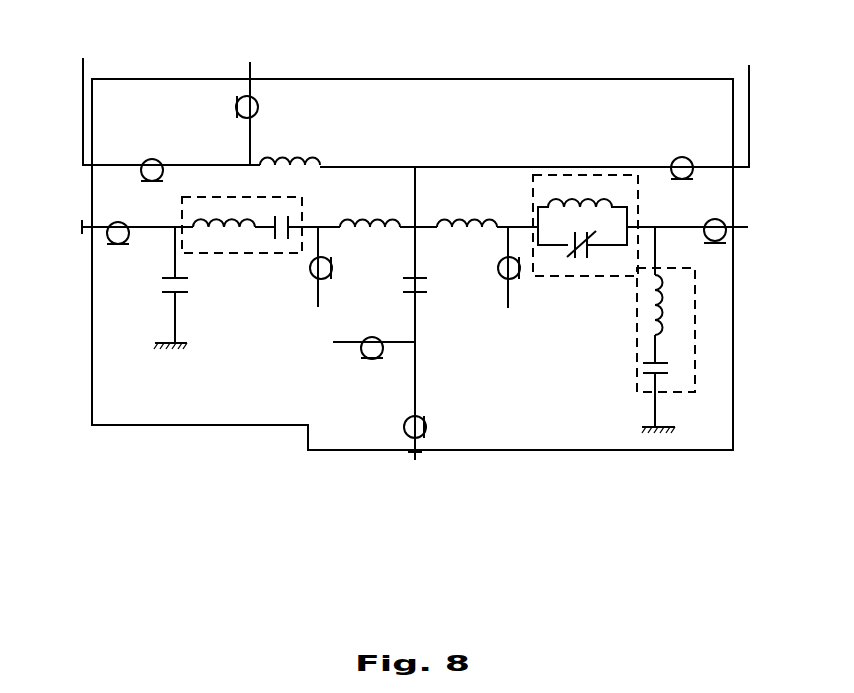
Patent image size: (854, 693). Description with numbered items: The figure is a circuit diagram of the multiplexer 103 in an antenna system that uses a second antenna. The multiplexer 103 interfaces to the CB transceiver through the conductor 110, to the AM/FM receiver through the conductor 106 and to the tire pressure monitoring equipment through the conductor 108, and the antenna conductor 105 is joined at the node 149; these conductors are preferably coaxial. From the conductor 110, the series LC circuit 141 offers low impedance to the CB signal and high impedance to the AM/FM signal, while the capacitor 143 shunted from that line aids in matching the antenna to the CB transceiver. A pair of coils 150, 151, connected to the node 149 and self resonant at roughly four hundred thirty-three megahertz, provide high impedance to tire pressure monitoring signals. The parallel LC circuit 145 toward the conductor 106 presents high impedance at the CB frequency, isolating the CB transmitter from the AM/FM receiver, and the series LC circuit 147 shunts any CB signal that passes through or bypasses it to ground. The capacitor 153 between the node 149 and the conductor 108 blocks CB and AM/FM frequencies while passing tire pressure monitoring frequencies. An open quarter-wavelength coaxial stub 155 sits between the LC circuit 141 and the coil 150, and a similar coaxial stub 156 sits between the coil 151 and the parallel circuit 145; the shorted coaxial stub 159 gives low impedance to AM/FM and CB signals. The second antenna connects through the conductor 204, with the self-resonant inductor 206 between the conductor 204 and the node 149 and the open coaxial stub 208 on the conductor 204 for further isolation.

The multiplexer 103 is at (520, 78).
The antenna conductor 105 is at (749, 138).
The conductor 106 is at (738, 228).
The conductor 108 is at (416, 452).
The conductor 110 is at (84, 228).
The series LC circuit 141 is at (280, 198).
The capacitor 143 is at (150, 288).
The parallel LC resonator 145 is at (618, 216).
The series LC shunt to ground 147 is at (637, 378).
The node 149 is at (414, 166).
The coil 150 is at (367, 220).
The coil 151 is at (462, 220).
The capacitor 153 is at (418, 275).
The coaxial stub 155 is at (320, 298).
The coaxial stub 156 is at (508, 298).
The shorted coaxial stub 159 is at (350, 342).
The conductor 204 is at (83, 107).
The inductor 206 is at (270, 160).
The open coaxial stub 208 is at (243, 120).